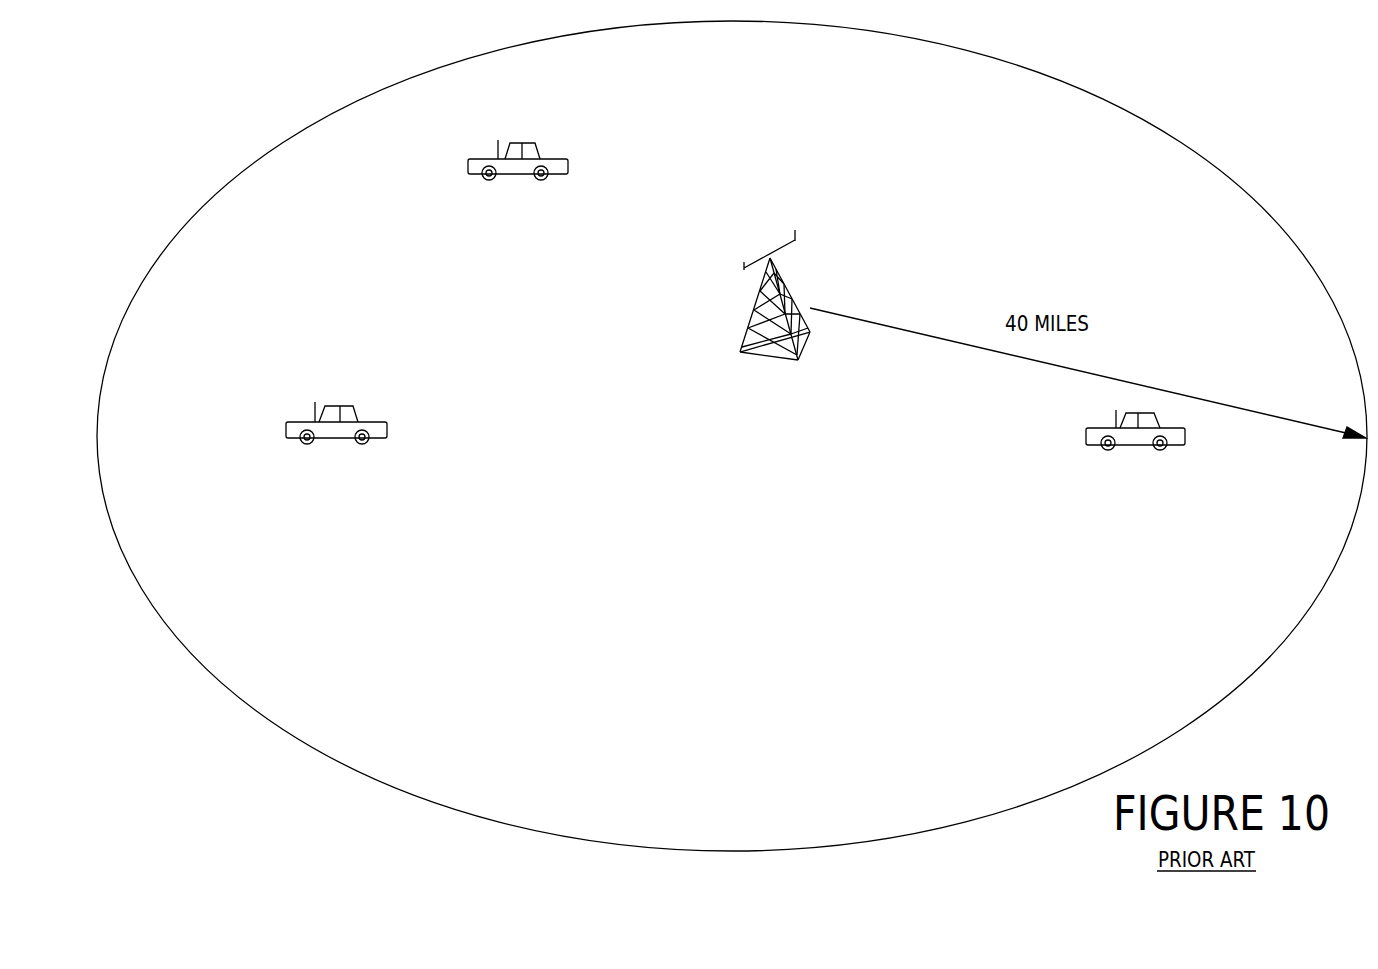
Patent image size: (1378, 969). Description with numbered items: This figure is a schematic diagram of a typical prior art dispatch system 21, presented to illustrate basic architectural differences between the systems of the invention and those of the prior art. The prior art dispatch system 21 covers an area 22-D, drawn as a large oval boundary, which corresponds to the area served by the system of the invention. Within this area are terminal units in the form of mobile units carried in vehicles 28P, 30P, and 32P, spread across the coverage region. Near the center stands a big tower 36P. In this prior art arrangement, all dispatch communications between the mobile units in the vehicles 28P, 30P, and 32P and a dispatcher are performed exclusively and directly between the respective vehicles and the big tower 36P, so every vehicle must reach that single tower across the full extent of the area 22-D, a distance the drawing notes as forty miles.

The prior art dispatch system 21 is at (1063, 55).
The area 22-D is at (1176, 142).
The vehicle 28P is at (1177, 445).
The vehicle 30P is at (553, 159).
The vehicle 32P is at (293, 438).
The big tower 36P is at (795, 301).